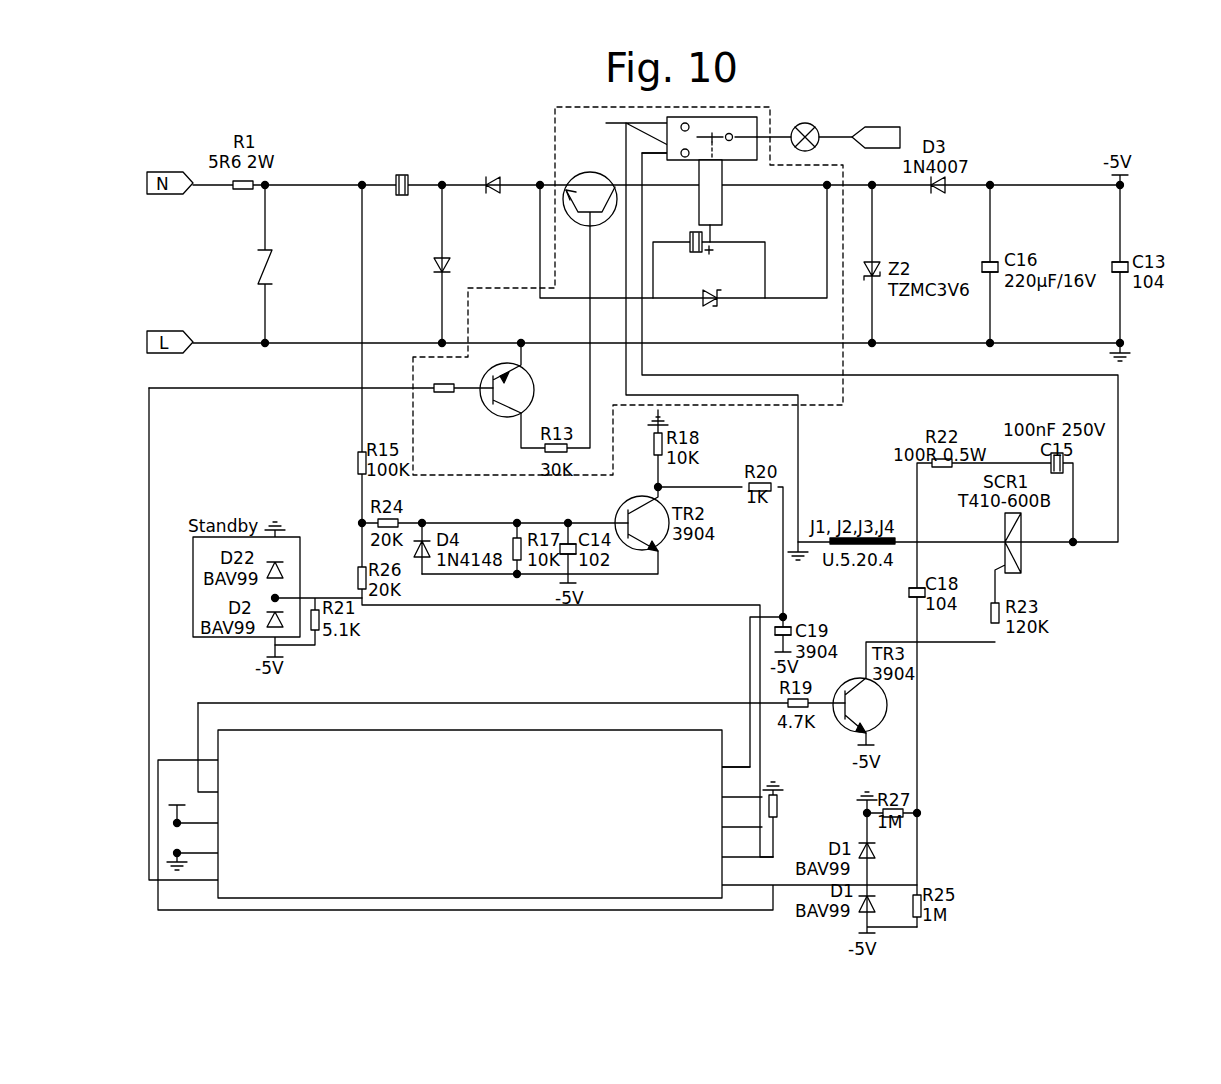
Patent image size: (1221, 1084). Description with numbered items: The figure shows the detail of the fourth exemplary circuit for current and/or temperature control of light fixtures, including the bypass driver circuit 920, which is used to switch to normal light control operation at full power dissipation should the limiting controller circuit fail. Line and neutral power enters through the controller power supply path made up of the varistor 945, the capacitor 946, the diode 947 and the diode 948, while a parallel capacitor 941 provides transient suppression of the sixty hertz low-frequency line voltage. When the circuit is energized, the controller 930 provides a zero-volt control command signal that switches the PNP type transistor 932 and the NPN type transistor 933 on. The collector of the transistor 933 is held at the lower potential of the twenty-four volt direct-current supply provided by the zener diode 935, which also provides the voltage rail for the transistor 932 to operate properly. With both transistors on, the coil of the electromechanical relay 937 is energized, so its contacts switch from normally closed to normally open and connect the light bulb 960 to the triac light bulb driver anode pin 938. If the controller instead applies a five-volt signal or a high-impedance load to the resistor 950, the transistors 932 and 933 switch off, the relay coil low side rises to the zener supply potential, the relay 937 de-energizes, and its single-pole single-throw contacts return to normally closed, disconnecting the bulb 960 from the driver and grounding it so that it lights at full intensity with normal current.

The bypass driver circuit 920 is at (555, 107).
The controller 930 is at (362, 730).
The PNP type transistor 932 is at (500, 410).
The NPN type transistor 933 is at (567, 210).
The zener diode 935 is at (722, 303).
The electromechanical relay 937 is at (716, 117).
The triad light bulb driver anode pin 938 is at (627, 134).
The parallel capacitor 941 is at (714, 236).
The varistor 945 is at (252, 271).
The capacitor 946 is at (358, 116).
The diode 947 is at (463, 113).
The diode 948 is at (437, 282).
The resistor 950 is at (432, 386).
The light bulb 960 is at (826, 130).